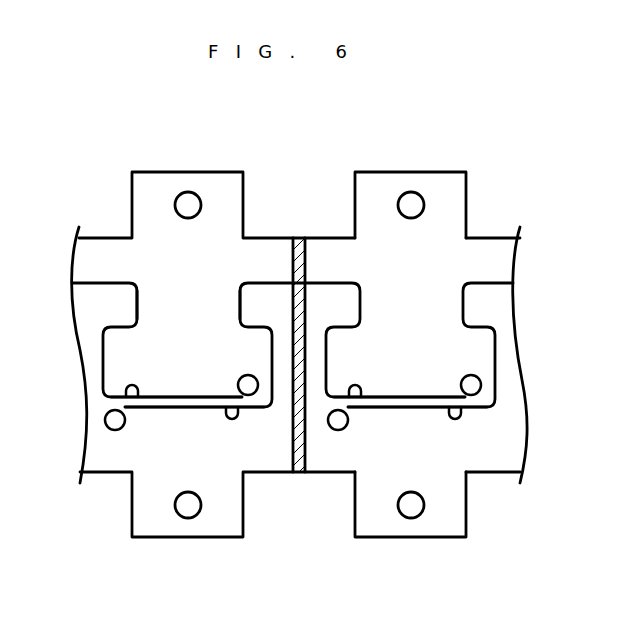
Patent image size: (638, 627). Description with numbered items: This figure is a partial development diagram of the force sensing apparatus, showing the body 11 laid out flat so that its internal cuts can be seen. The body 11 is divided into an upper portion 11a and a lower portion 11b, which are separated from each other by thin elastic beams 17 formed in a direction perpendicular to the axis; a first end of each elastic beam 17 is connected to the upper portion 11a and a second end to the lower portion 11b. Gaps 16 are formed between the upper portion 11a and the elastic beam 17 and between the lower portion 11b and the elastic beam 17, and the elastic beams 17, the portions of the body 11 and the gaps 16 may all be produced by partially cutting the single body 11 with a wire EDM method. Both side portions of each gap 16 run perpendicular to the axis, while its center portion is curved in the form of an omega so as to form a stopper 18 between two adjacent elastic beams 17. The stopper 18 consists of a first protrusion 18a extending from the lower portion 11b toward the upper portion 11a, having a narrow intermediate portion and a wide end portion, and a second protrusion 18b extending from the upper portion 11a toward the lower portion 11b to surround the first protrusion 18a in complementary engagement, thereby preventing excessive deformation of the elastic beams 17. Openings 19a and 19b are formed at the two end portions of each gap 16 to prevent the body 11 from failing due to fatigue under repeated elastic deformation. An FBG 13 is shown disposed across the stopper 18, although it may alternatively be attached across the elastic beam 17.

The body 11 is at (411, 172).
The upper portion 11a is at (458, 200).
The lower portion 11b is at (441, 523).
The FBG 13 is at (299, 238).
The gap 16 is at (103, 362).
The elastic beam 17 is at (205, 402).
The stopper 18 is at (275, 125).
The first protrusion 18a is at (258, 293).
The second protrusion 18b is at (257, 350).
The opening 19a is at (115, 422).
The opening 19b is at (252, 388).